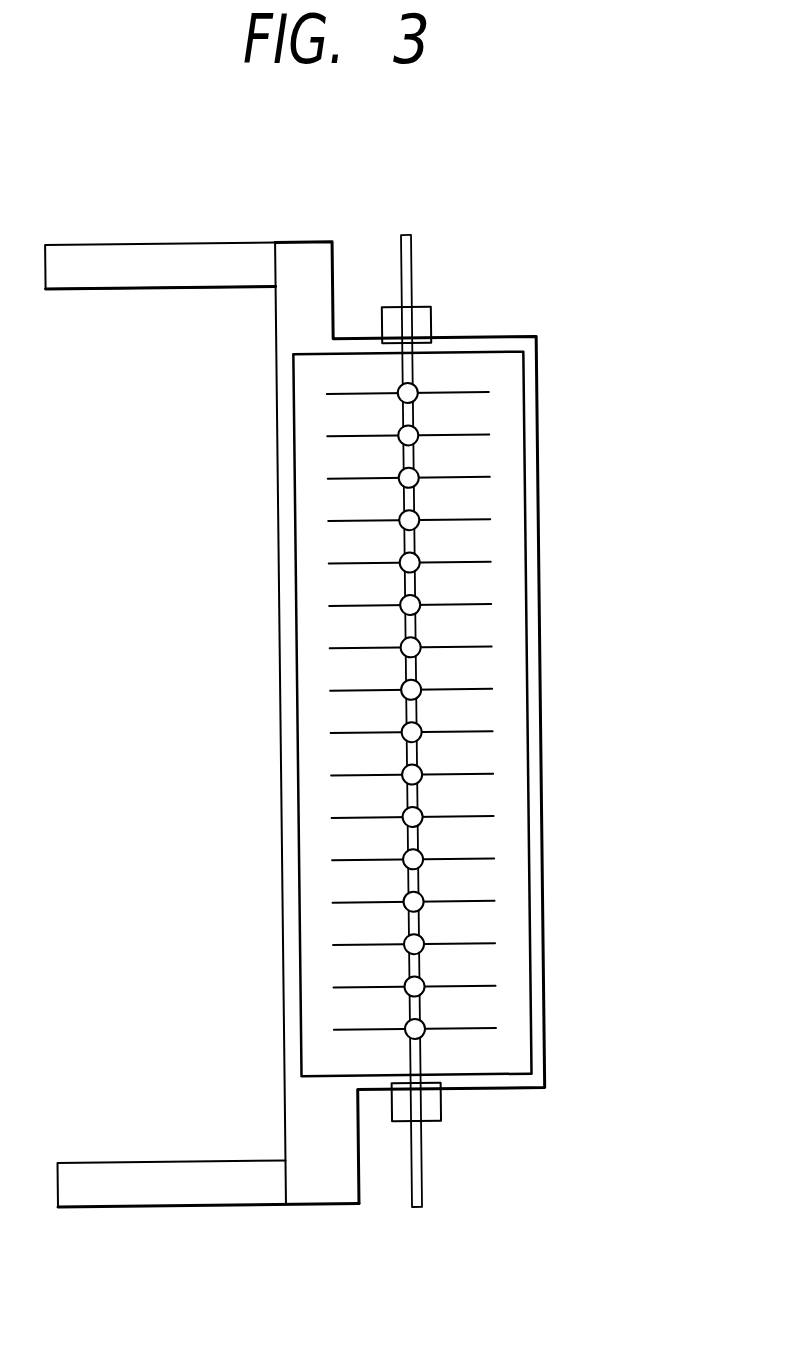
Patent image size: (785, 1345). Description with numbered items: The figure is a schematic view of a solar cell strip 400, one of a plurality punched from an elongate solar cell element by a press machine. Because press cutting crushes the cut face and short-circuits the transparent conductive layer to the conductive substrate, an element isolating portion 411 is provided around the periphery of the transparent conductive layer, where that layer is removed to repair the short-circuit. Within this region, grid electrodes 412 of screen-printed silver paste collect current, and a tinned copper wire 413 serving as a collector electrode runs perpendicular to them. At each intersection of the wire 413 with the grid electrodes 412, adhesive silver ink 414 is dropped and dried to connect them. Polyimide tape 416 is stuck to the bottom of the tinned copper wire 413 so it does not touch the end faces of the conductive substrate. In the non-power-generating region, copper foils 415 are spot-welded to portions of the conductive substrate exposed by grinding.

The solar cell strip 400 is at (513, 1090).
The element isolating portion 411 is at (530, 937).
The grid electrodes 412 is at (470, 733).
The tinned copper wire 413 is at (413, 252).
The adhesive silver ink 414 is at (418, 612).
The copper foils 415 is at (70, 257).
The polyimide tape 416 is at (432, 315).